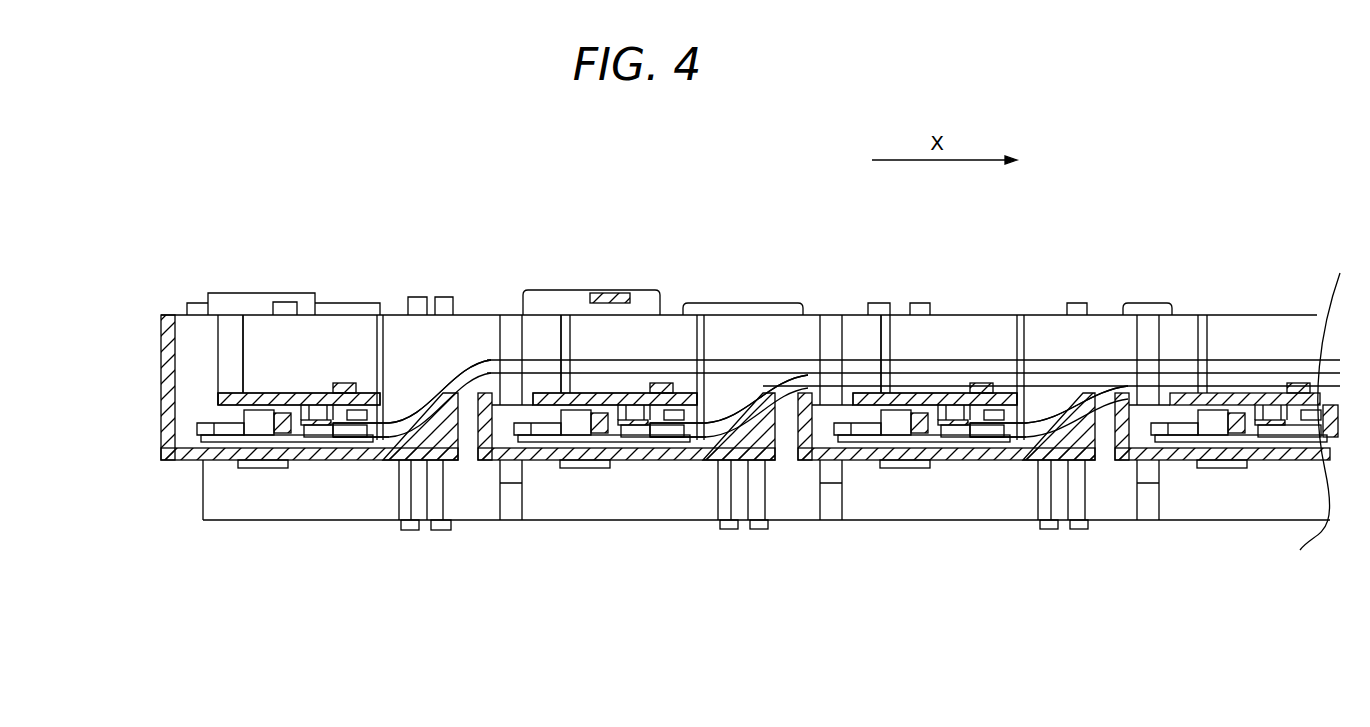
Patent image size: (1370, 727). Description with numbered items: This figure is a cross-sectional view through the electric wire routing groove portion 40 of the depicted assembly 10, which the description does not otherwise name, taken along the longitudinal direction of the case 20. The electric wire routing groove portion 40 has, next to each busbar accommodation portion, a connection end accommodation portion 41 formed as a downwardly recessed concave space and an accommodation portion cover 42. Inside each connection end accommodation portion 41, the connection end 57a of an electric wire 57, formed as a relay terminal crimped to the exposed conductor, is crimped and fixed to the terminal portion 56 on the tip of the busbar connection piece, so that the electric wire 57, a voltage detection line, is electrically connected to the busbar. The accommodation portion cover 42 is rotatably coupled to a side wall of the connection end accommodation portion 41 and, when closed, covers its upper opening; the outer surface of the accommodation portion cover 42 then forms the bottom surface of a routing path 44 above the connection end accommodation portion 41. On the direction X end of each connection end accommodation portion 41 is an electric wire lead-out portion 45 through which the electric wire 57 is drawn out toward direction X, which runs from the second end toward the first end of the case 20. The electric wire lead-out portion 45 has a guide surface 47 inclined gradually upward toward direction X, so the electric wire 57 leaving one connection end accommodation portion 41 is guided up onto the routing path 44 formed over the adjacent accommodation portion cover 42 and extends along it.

The connector device 10 is at (705, 203).
The case 20 is at (1252, 294).
The electric wire routing groove portion 40 is at (1040, 318).
The connection end accommodation portion 41 is at (327, 447).
The accommodation portion cover 42 is at (300, 397).
The routing path 44 is at (337, 358).
The electric wire lead-out portion 45 is at (397, 413).
The guide surface 47 is at (390, 430).
The terminal portion 56 is at (253, 427).
The electric wire 57 is at (478, 363).
The connection end 57a is at (313, 437).